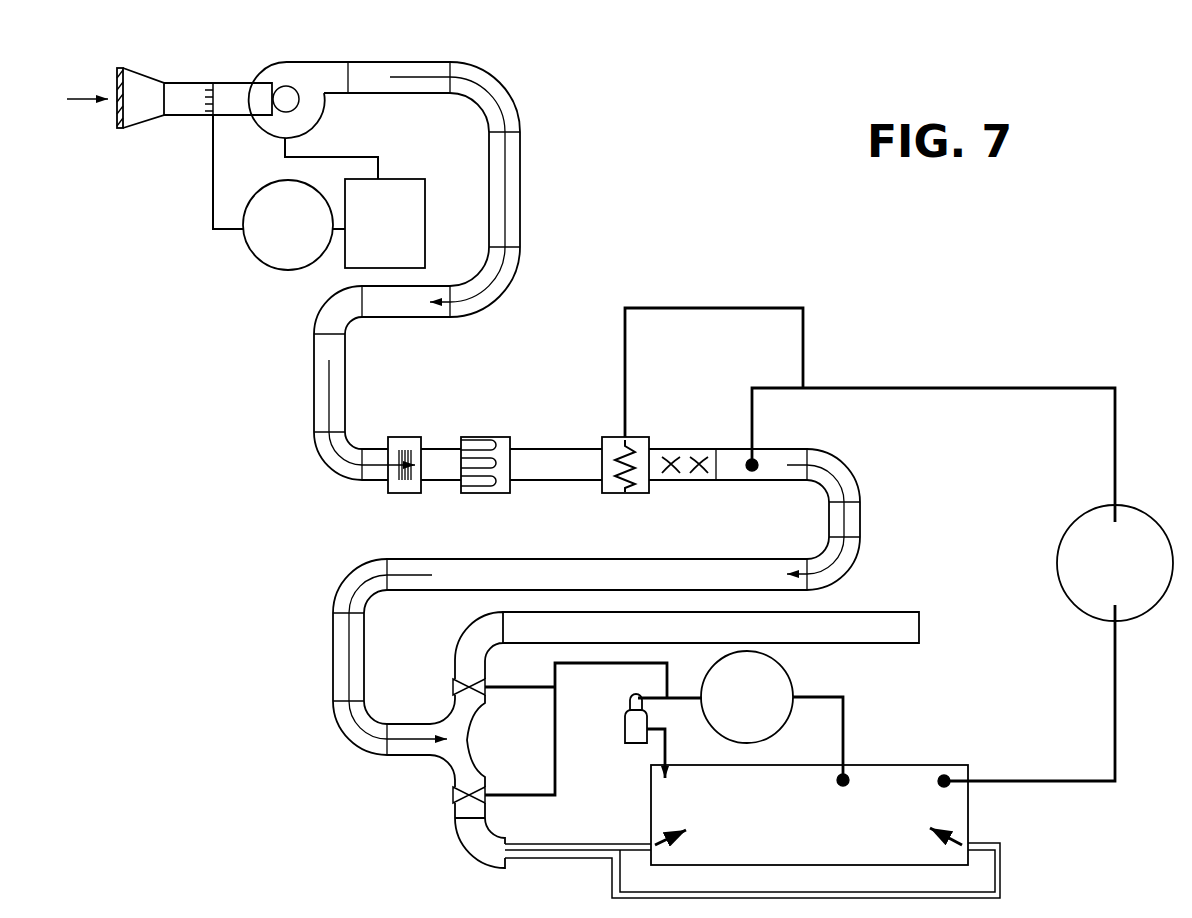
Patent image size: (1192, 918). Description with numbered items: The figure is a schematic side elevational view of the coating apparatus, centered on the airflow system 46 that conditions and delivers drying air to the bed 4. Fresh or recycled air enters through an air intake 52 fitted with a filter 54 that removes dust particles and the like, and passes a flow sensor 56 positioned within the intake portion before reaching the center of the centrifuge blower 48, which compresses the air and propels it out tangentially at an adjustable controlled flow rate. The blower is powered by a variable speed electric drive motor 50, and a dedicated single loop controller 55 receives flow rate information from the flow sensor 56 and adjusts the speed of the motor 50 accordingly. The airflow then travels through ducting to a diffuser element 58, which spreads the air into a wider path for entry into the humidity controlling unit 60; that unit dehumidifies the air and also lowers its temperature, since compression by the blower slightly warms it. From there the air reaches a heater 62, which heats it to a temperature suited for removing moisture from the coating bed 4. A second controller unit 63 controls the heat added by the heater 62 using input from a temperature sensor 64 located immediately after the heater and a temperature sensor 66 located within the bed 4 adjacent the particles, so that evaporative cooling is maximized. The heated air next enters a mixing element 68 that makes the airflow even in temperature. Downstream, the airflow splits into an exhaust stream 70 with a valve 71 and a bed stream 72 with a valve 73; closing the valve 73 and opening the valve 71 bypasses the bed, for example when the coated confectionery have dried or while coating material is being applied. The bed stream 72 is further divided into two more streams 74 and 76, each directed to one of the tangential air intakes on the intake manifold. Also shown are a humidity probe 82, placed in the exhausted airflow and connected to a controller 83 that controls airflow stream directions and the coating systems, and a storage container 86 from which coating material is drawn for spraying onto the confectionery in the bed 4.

The bed 4 is at (930, 742).
The airflow system 46 is at (568, 128).
The centrifuge blower 48 is at (278, 63).
The variable speed electric drive motor 50 is at (417, 185).
The air intake 52 is at (147, 82).
The filter 54 is at (117, 75).
The single loop controller 55 is at (273, 273).
The flow sensor 56 is at (208, 83).
The diffuser element 58 is at (388, 487).
The humidity controlling unit 60 is at (512, 443).
The heater 62 is at (600, 487).
The second controller unit 63 is at (1095, 515).
The temperature sensor 64 is at (754, 462).
The temperature sensor 66 is at (947, 779).
The mixing element 68 is at (678, 475).
The exhaust stream 70 is at (470, 638).
The valve 71 is at (484, 682).
The bed stream 72 is at (467, 837).
The valve 73 is at (487, 789).
The stream 74 is at (578, 843).
The stream 76 is at (583, 862).
The humidity probe 82 is at (848, 773).
The controller 83 is at (730, 730).
The storage container 86 is at (625, 723).